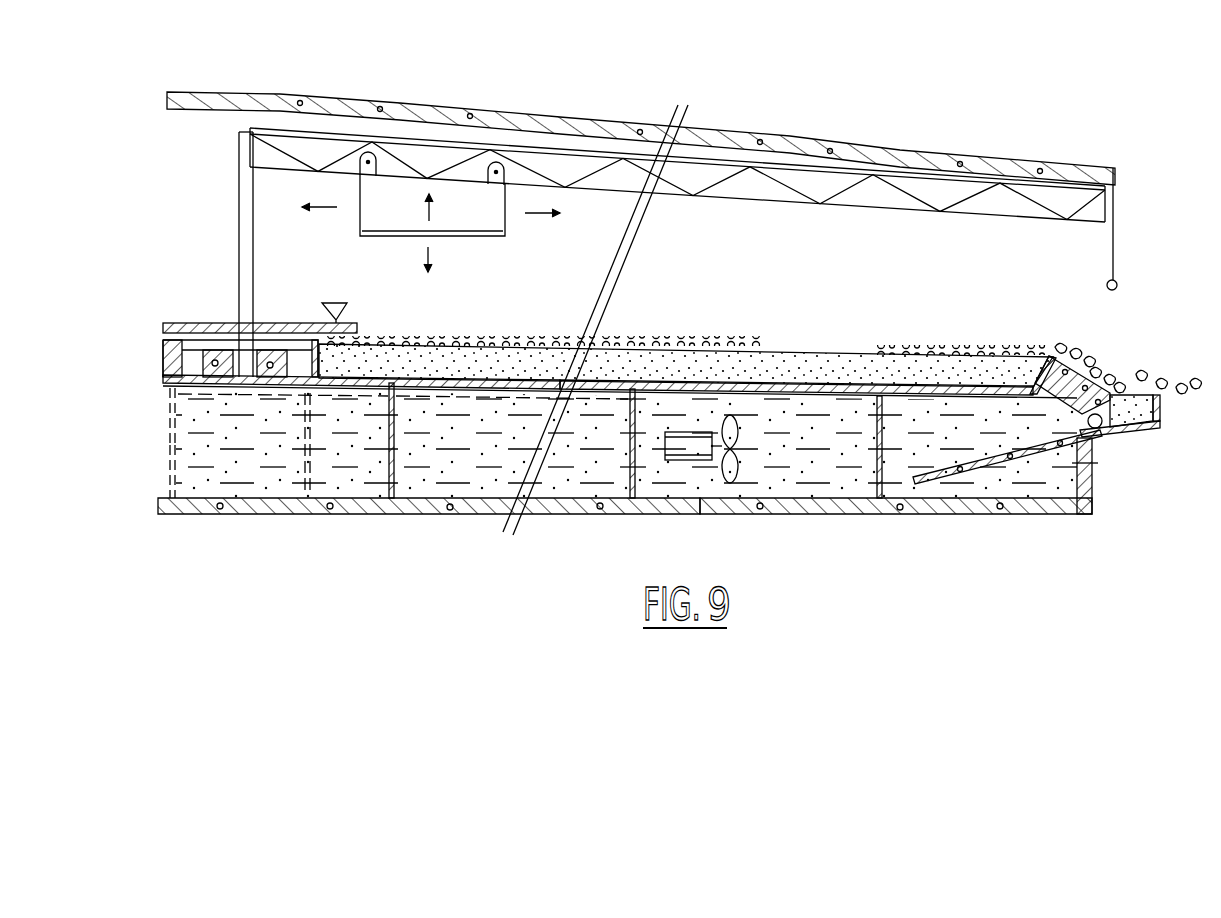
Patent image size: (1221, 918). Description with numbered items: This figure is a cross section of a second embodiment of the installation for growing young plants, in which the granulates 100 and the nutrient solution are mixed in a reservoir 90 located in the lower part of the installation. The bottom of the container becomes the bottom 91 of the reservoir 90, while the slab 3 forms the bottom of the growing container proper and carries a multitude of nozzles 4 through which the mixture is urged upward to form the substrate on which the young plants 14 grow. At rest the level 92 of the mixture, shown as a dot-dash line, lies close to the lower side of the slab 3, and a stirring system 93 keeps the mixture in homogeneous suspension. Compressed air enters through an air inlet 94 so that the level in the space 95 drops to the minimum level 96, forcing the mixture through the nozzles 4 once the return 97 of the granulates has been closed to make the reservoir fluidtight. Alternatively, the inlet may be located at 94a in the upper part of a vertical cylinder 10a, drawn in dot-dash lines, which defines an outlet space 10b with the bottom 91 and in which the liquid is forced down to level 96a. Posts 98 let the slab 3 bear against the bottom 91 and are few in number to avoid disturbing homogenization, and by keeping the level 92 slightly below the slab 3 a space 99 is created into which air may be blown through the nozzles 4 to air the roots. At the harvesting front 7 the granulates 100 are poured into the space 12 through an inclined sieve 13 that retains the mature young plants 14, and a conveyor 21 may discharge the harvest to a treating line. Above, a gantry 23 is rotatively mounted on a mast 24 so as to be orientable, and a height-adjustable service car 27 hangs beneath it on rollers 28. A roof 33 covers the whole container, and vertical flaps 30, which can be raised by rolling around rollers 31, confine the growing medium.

The slab 3 is at (504, 380).
The nozzles 4 is at (809, 385).
The harvesting front 7 is at (1053, 353).
The vertical cylinder 10a is at (170, 458).
The outlet space 10b is at (172, 492).
The space 12 is at (1154, 426).
The inclined sieve 13 is at (1127, 392).
The young plants 14 is at (1098, 370).
The conveyor 21 is at (1177, 404).
The gantry 23 is at (307, 163).
The mast 24 is at (239, 199).
The service car 27 is at (393, 233).
The rollers 28 is at (372, 155).
The vertical flaps 30 is at (1116, 196).
The rollers 31 is at (1118, 285).
The roof 33 is at (894, 150).
The reservoir 90 is at (797, 460).
The reservoir bottom 91 is at (427, 513).
The level 92 is at (592, 393).
The stirring system 93 is at (683, 462).
The air inlet 94 is at (1096, 465).
The alternative air inlet location 94a is at (166, 402).
The space 95 is at (1032, 473).
The minimum level 96 is at (977, 477).
The level 96a is at (243, 432).
The return 97 is at (1106, 440).
The posts 98 is at (389, 514).
The space 99 is at (645, 384).
The granulates 100 is at (692, 365).